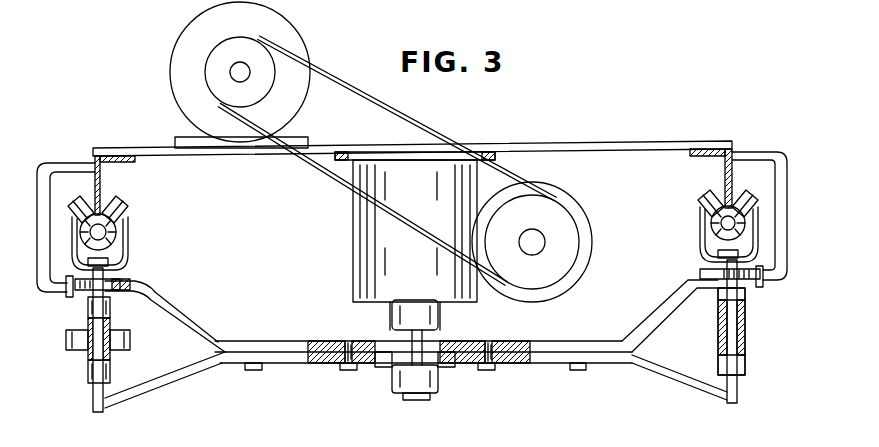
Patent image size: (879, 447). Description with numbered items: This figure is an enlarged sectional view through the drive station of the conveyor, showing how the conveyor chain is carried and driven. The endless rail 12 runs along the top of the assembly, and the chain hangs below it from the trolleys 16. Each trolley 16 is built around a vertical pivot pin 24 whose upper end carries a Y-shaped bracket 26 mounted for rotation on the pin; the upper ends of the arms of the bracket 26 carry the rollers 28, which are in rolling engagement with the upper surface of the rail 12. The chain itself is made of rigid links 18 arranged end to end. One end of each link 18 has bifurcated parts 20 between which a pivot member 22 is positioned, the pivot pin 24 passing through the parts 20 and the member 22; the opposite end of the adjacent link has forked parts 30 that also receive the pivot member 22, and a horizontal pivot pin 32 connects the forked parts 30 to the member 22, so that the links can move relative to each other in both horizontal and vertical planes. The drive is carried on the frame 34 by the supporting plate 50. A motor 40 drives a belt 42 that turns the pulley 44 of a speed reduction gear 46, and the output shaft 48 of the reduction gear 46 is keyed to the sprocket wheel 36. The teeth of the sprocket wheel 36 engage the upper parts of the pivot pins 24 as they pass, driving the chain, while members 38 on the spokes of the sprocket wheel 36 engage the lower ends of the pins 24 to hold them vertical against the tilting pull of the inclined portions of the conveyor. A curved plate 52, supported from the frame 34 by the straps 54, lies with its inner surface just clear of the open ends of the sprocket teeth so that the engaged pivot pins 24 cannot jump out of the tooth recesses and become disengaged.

The endless rail 12 is at (110, 232).
The trolley 16 is at (139, 240).
The rigid link 18 is at (746, 324).
The bifurcated parts 20 is at (110, 310).
The pivot member 22 is at (718, 328).
The pivot pin 24 is at (98, 412).
The Y-shaped bracket 26 is at (126, 250).
The roller 28 is at (80, 200).
The forked parts 30 is at (88, 330).
The horizontal pivot pin 32 is at (72, 348).
The frame 34 is at (92, 152).
The sprocket wheel 36 is at (310, 364).
The members 38 is at (172, 378).
The motor 40 is at (200, 20).
The belt 42 is at (395, 121).
The pulley 44 is at (578, 206).
The speed reduction gear 46 is at (360, 248).
The output shaft 48 is at (400, 332).
The supporting plate 50 is at (578, 146).
The curved plate 52 is at (764, 284).
The strap 54 is at (40, 150).